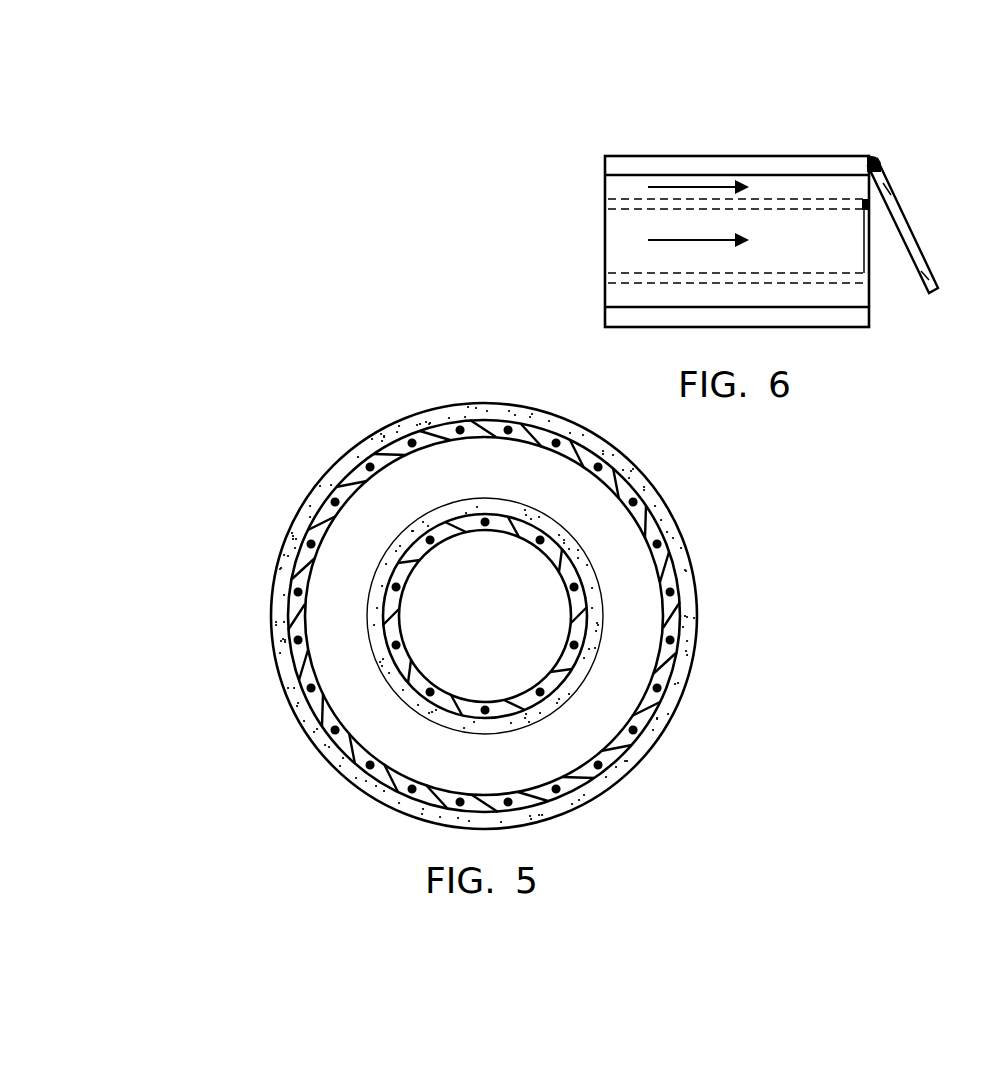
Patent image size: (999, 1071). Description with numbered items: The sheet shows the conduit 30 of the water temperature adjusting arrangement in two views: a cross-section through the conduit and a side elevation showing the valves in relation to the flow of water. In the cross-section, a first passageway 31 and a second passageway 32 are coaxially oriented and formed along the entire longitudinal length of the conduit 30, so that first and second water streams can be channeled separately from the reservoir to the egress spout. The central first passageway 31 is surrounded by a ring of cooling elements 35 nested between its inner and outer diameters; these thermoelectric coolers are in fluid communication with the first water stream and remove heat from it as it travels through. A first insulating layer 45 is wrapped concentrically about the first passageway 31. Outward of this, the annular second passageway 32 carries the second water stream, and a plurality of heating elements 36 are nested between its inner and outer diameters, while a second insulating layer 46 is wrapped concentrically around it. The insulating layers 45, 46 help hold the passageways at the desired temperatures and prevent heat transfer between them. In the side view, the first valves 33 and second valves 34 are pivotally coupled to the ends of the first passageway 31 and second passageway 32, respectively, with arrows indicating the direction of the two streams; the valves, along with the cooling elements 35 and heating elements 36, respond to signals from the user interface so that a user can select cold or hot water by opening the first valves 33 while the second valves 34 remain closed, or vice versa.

In FIG. 5, the conduit 30 is at (293, 414).
In FIG. 6, the conduit 30 is at (606, 119).
In FIG. 5, the first passageway 31 is at (498, 627).
In FIG. 6, the first passageway 31 is at (800, 253).
In FIG. 5, the second passageway 32 is at (498, 775).
In FIG. 6, the second passageway 32 is at (800, 199).
In FIG. 6, the first valves 33 is at (870, 255).
In FIG. 6, the second valves 34 is at (882, 183).
In FIG. 5, the cooling elements 35 is at (479, 520).
In FIG. 5, the heating elements 36 is at (648, 513).
In FIG. 5, the first insulating layer 45 is at (527, 513).
In FIG. 5, the second insulating layer 46 is at (662, 717).